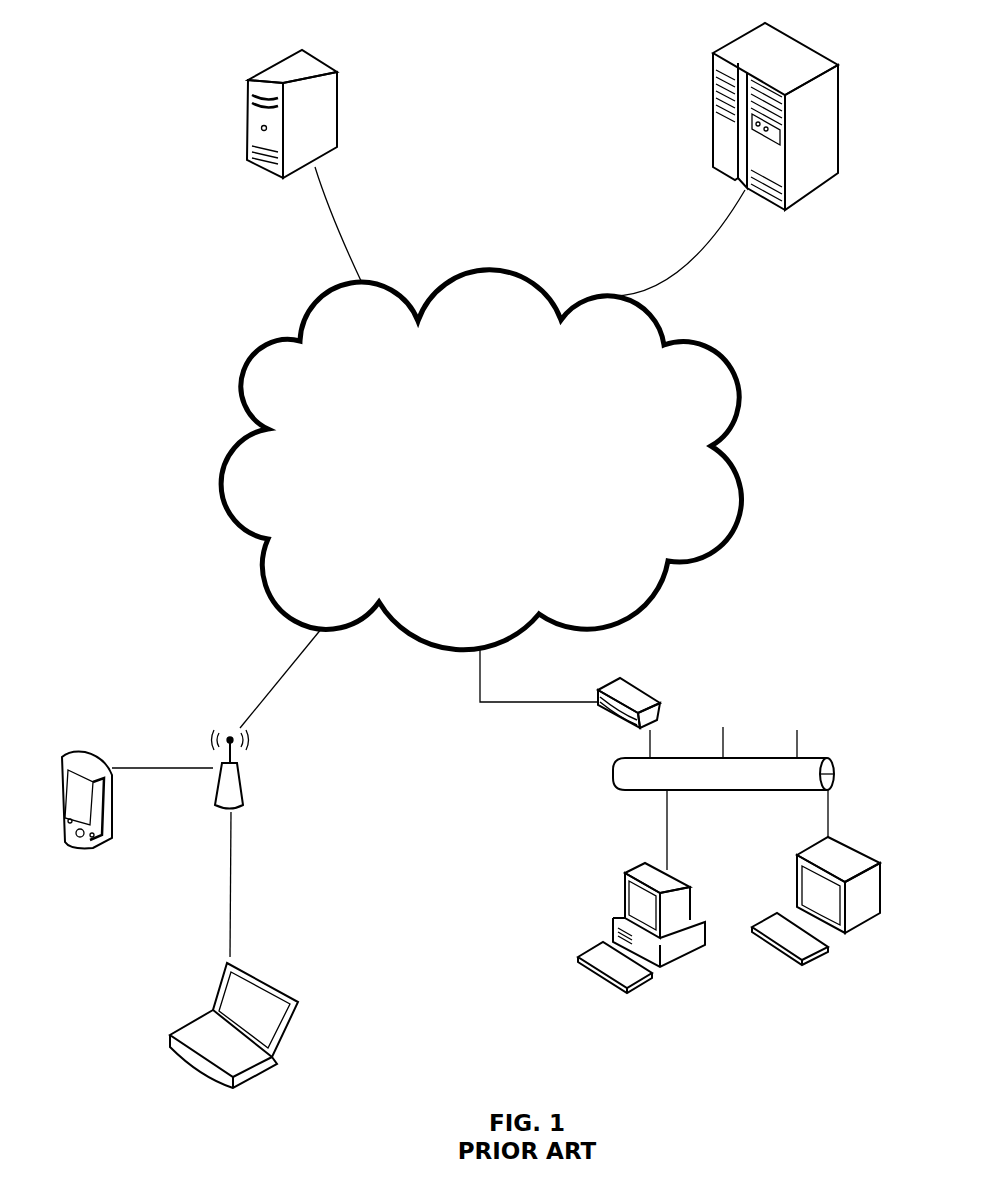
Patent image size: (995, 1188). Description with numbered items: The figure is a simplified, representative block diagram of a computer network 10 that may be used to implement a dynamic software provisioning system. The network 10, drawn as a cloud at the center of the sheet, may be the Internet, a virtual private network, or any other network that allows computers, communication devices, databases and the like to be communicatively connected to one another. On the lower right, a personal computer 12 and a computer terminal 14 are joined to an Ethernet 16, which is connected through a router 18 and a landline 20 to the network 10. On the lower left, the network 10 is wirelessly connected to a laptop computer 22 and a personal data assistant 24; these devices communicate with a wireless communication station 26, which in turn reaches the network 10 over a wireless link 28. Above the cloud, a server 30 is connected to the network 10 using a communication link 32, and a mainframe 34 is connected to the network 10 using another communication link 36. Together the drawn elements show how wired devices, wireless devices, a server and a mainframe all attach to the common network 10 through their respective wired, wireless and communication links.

The network 10 is at (185, 345).
The personal computer 12 is at (623, 912).
The computer terminal 14 is at (863, 857).
The Ethernet 16 is at (825, 758).
The router 18 is at (660, 702).
The landline 20 is at (520, 702).
The laptop computer 22 is at (253, 1077).
The personal data assistant 24 is at (90, 755).
The wireless communication station 26 is at (242, 803).
The wireless link 28 is at (270, 690).
The server 30 is at (338, 113).
The communication link 32 is at (343, 258).
The mainframe 34 is at (798, 207).
The communication link 36 is at (715, 243).